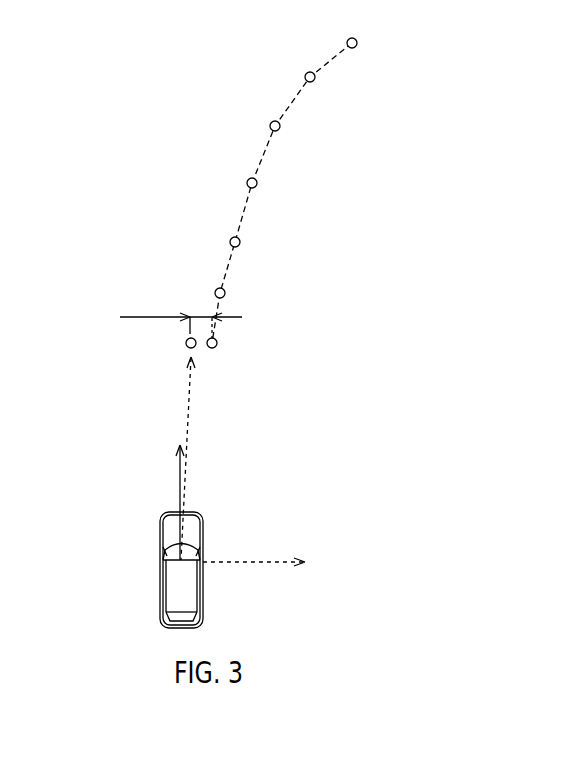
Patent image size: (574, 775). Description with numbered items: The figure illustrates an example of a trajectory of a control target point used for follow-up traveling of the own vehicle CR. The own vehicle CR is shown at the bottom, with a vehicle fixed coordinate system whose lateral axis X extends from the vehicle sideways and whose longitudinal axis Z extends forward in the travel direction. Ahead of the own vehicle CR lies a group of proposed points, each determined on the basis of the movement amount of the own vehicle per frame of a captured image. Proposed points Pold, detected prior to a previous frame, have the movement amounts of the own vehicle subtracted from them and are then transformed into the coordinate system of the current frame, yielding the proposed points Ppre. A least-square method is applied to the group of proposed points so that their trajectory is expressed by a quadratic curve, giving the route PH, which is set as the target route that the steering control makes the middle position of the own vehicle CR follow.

The route PH is at (257, 158).
The proposed points Pold is at (247, 294).
The proposed points Ppre is at (230, 344).
The vehicle fixed coordinate system axis Z is at (175, 458).
The vehicle fixed coordinate system axis X is at (264, 563).
The own vehicle CR is at (203, 597).